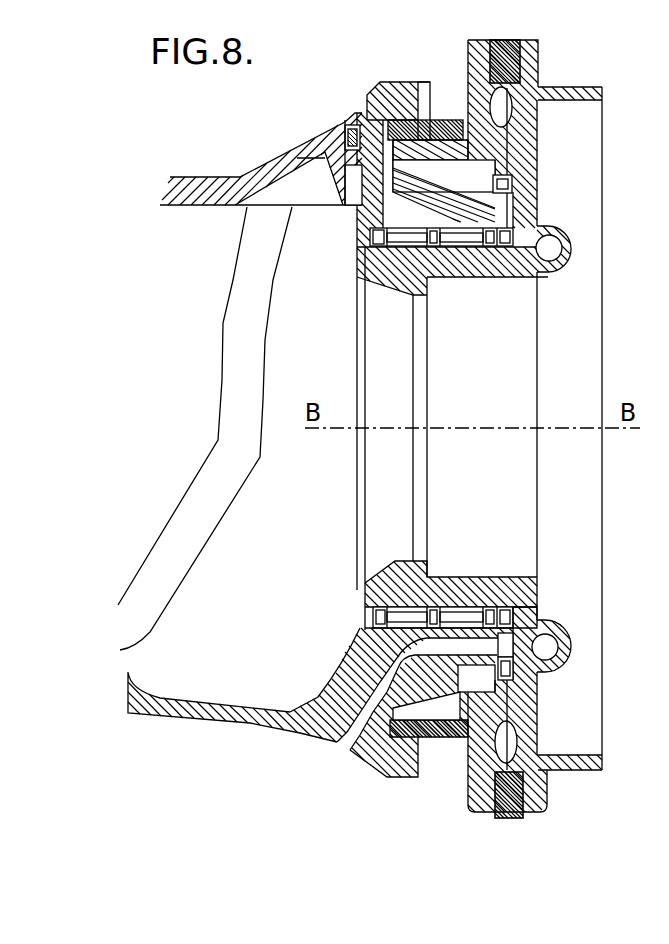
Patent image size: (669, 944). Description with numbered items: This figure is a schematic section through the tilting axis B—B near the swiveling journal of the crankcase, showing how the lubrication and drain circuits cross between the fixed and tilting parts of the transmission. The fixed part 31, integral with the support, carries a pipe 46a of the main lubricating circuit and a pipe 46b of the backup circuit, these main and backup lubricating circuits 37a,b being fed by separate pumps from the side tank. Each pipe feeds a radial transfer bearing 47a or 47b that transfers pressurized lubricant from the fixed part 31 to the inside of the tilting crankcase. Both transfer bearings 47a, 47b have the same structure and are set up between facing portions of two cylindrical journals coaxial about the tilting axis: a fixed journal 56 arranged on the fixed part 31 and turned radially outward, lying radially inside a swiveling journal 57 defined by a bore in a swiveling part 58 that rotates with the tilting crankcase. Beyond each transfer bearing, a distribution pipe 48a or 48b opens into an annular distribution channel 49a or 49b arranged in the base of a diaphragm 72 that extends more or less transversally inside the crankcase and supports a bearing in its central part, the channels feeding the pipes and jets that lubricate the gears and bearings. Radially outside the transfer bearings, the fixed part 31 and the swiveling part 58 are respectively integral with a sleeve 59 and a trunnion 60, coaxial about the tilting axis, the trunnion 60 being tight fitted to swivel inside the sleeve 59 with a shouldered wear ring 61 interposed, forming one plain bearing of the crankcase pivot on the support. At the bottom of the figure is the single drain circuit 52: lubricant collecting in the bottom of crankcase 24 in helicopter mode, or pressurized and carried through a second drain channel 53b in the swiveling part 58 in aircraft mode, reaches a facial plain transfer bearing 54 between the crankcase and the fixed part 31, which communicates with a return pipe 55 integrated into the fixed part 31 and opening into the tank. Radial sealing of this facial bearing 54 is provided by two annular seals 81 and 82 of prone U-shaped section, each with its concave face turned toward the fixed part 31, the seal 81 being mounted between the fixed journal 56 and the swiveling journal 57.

The bottom crankcase 24 is at (246, 166).
The diaphragm 72 is at (338, 183).
The annular distribution channel 49a is at (345, 128).
The annular distribution channel 49b is at (343, 192).
The trunnion 60 is at (428, 81).
The sleeve 59 is at (447, 152).
The distribution pipe 48b is at (425, 212).
The transfer bearing 47b is at (512, 220).
The main and backup lubricating circuits 37a,b is at (550, 252).
The pipe 46b is at (480, 262).
The pipe 46a is at (458, 263).
The distribution pipe 48a is at (393, 207).
The transfer bearing 47a is at (400, 243).
The fixed cylindrical journal 56 is at (405, 612).
The swiveling cylindrical journal 57 is at (410, 620).
The annular seal 81 is at (533, 610).
The plain transfer bearing 54 is at (526, 622).
The return pipe 55 is at (545, 647).
The drain circuit 52 is at (574, 657).
The annular seal 82 is at (517, 672).
The fixed part 31 is at (535, 728).
The second drain channel 53b is at (350, 720).
The swiveling part 58 is at (378, 741).
The shouldered wear ring 61 is at (466, 740).